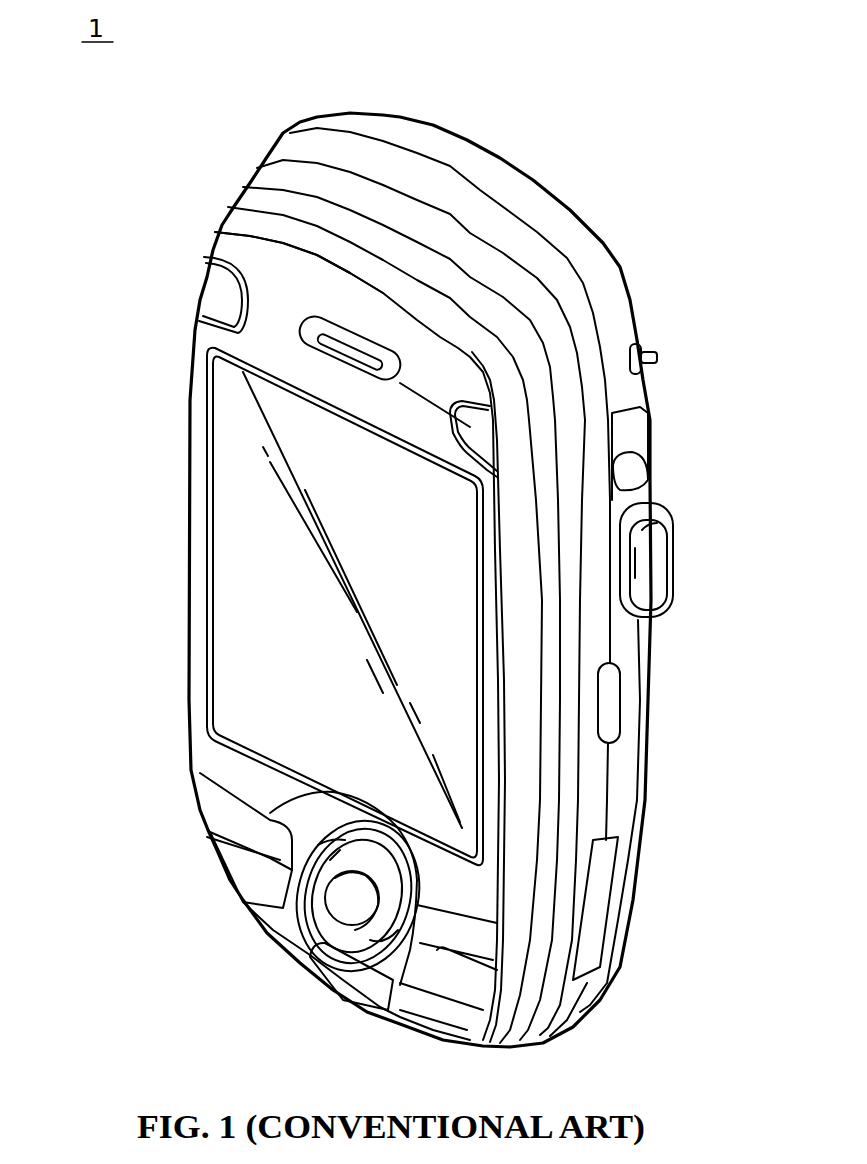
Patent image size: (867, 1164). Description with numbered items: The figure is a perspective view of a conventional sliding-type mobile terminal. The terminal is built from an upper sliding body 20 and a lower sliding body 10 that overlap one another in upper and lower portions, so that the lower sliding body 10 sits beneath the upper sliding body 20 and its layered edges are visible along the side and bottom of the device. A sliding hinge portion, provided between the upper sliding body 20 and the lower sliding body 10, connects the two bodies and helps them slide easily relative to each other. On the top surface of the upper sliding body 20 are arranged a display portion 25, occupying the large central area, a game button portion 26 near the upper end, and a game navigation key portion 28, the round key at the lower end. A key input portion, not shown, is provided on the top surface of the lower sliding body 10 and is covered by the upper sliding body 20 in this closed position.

The lower sliding body 10 is at (560, 222).
The upper sliding body 20 is at (253, 257).
The display portion 25 is at (238, 600).
The game button portion 26 is at (335, 362).
The game navigation key portion 28 is at (307, 842).